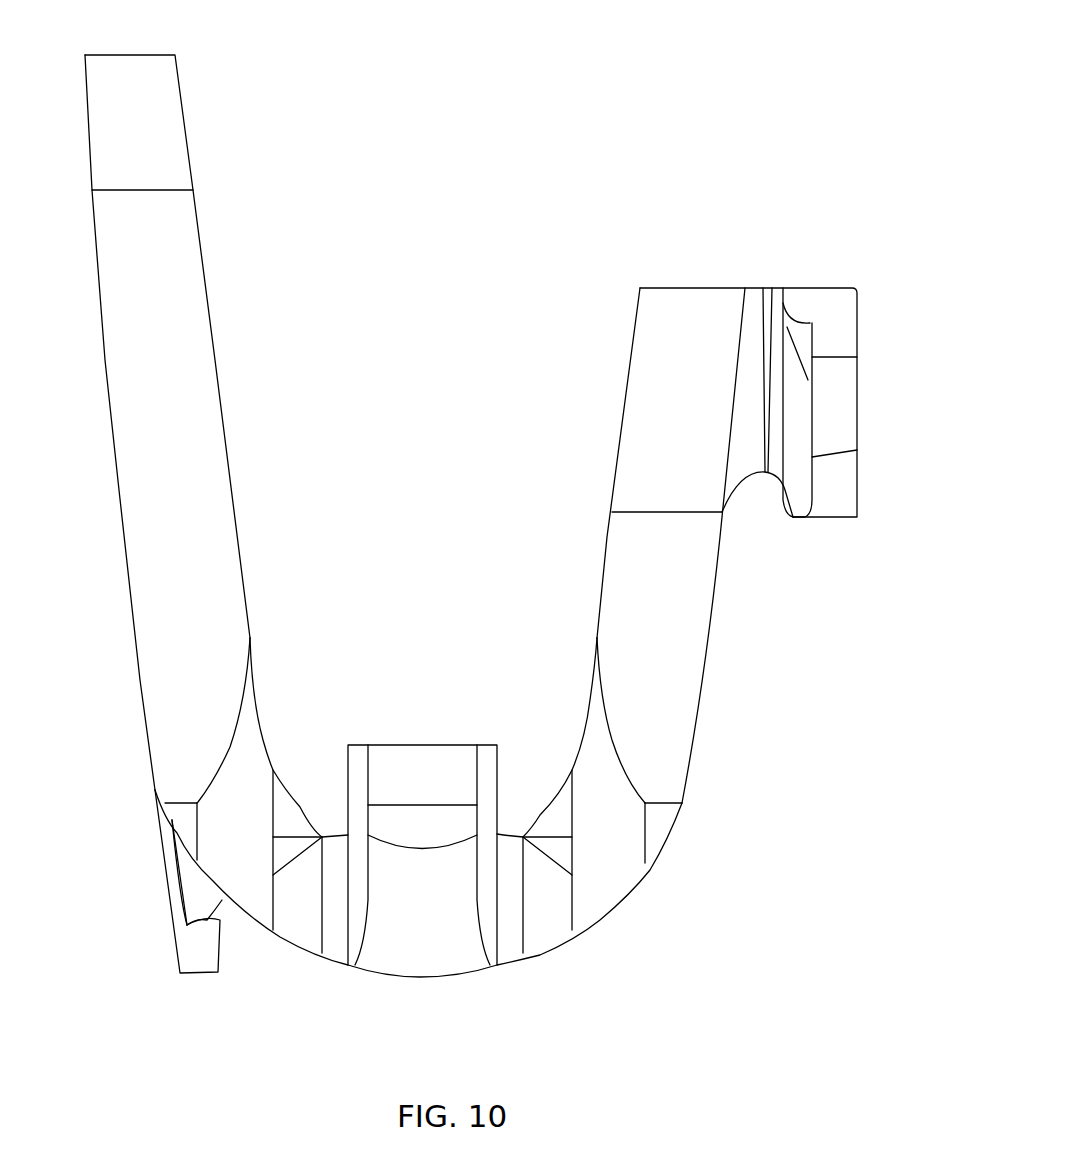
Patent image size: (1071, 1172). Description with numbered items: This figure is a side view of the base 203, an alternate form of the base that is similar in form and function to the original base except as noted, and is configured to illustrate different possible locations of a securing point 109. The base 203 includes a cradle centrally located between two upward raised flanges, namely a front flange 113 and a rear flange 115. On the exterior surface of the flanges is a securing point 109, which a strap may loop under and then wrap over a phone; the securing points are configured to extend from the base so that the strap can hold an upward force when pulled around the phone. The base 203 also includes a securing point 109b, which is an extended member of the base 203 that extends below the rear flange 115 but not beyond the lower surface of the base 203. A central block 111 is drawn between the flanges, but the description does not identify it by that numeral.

The base 203 is at (523, 58).
The rear flange 115 is at (117, 490).
The front flange 113 is at (703, 693).
The securing point 109 is at (860, 290).
The securing point 109b is at (173, 930).
The central block 111 is at (417, 745).